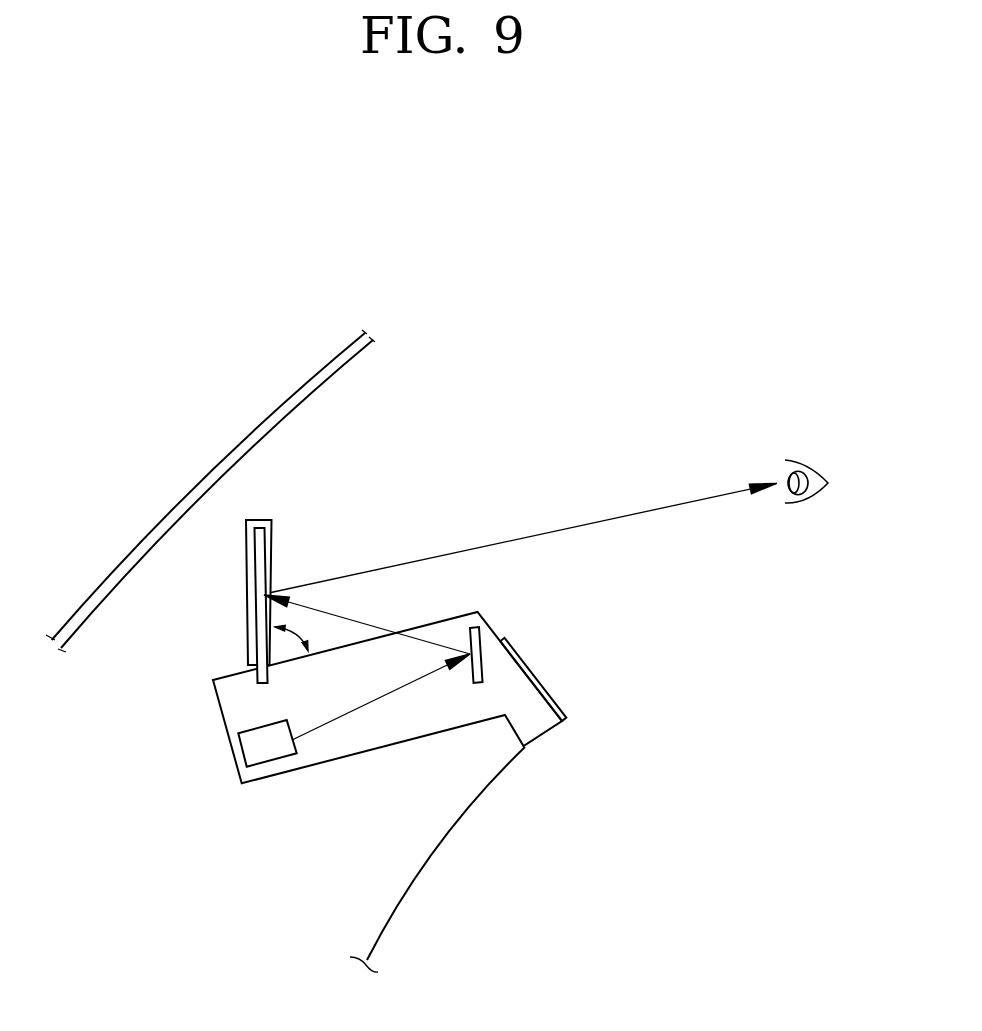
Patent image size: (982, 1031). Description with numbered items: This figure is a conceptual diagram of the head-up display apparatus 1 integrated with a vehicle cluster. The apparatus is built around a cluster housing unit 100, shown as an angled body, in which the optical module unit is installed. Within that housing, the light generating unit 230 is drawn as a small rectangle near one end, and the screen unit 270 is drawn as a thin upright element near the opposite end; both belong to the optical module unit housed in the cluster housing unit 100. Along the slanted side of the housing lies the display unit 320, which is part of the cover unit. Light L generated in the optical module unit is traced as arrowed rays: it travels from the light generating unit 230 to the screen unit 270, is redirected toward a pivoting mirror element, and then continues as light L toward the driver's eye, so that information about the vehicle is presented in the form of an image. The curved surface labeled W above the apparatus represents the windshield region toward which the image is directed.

The head-up display apparatus 1 is at (341, 685).
The cluster housing unit 100 is at (383, 728).
The light generating unit 230 is at (250, 745).
The screen unit 270 is at (477, 633).
The display unit 320 is at (548, 695).
The windshield W is at (268, 420).
The light L is at (593, 522).